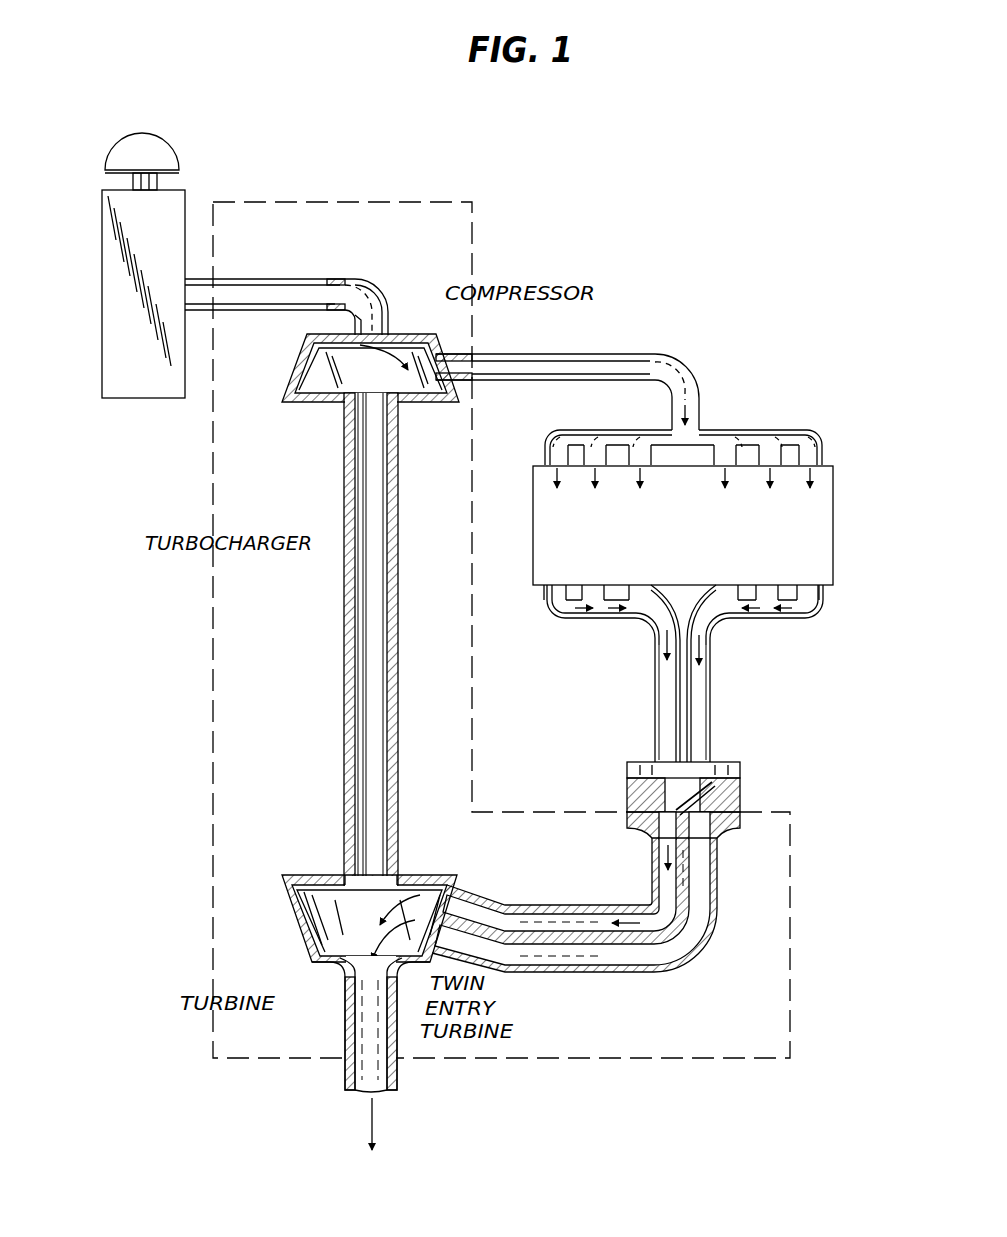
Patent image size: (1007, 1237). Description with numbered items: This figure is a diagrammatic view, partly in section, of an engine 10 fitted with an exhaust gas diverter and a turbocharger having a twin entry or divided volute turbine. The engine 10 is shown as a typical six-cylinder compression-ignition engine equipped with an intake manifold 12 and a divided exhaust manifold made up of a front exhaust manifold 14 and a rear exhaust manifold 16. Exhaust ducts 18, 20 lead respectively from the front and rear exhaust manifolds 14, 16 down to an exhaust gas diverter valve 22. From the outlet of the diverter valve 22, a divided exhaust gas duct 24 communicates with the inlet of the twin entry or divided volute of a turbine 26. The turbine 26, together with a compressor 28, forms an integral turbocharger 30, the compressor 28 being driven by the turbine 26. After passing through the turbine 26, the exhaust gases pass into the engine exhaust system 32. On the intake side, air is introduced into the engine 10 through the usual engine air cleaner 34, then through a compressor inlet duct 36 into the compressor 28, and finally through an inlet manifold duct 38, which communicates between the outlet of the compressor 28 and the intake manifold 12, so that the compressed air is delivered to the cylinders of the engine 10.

The engine 10 is at (835, 513).
The intake manifold 12 is at (810, 437).
The front exhaust manifold 14 is at (582, 644).
The rear exhaust manifold 16 is at (820, 616).
The exhaust duct 18 is at (657, 740).
The exhaust duct 20 is at (715, 740).
The exhaust gas diverter valve 22 is at (630, 828).
The divided exhaust gas duct 24 is at (652, 972).
The turbine 26 is at (300, 924).
The compressor 28 is at (300, 372).
The turbocharger 30 is at (350, 585).
The engine exhaust system 32 is at (350, 1032).
The engine air cleaner 34 is at (110, 252).
The compressor inlet duct 36 is at (307, 292).
The inlet manifold duct 38 is at (655, 365).